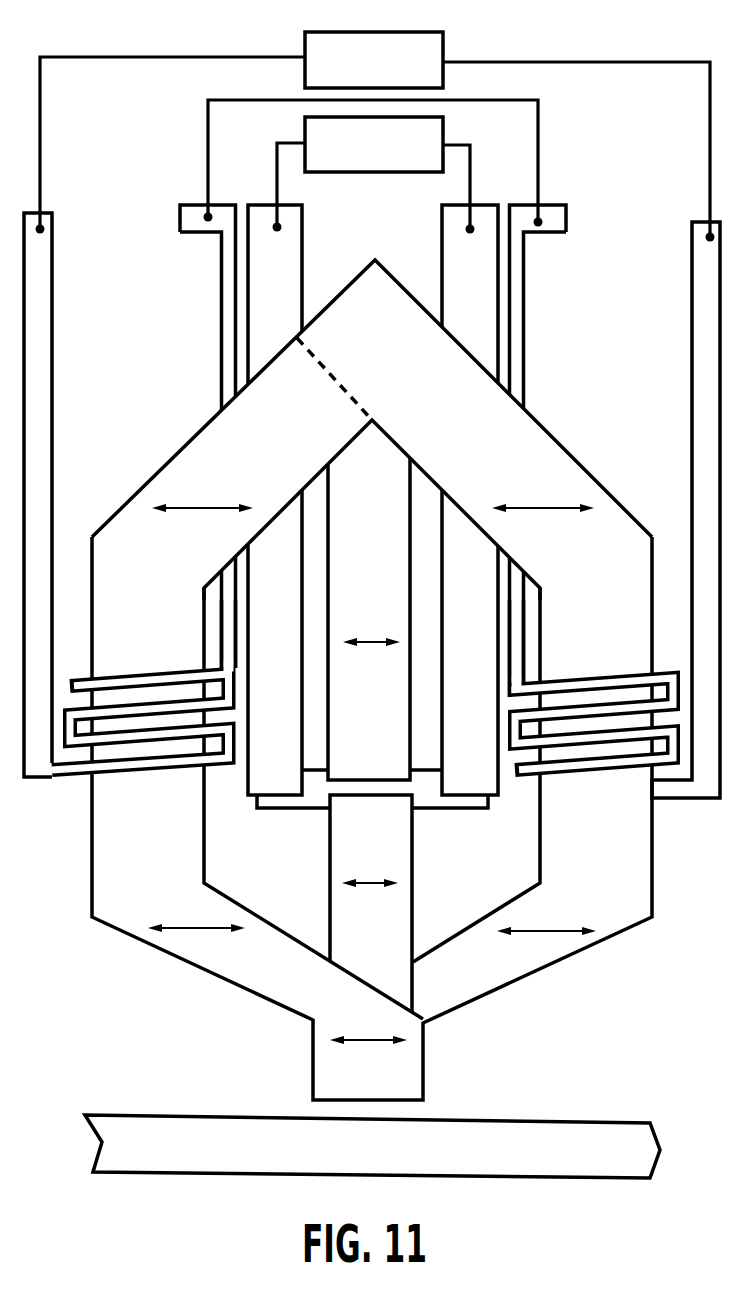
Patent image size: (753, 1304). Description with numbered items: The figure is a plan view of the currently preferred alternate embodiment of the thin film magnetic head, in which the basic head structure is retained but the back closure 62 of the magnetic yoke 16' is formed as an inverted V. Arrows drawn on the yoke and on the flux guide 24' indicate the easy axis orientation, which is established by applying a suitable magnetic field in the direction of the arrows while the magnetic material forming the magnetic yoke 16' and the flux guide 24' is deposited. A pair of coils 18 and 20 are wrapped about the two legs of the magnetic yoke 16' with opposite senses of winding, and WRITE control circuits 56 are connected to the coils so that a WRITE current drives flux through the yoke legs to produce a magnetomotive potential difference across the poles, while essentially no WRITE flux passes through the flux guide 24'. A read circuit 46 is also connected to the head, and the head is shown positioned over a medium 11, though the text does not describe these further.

The write circuit 56 is at (438, 48).
The read circuit 46 is at (305, 125).
The magnetic yoke apex portion 62 is at (367, 300).
The magnetic core body 16' is at (338, 818).
The write coil (left) 18 is at (155, 680).
The write coil (right) 20 is at (587, 685).
The center pole piece 24' is at (372, 903).
The magnetic recording medium 11 is at (560, 1138).